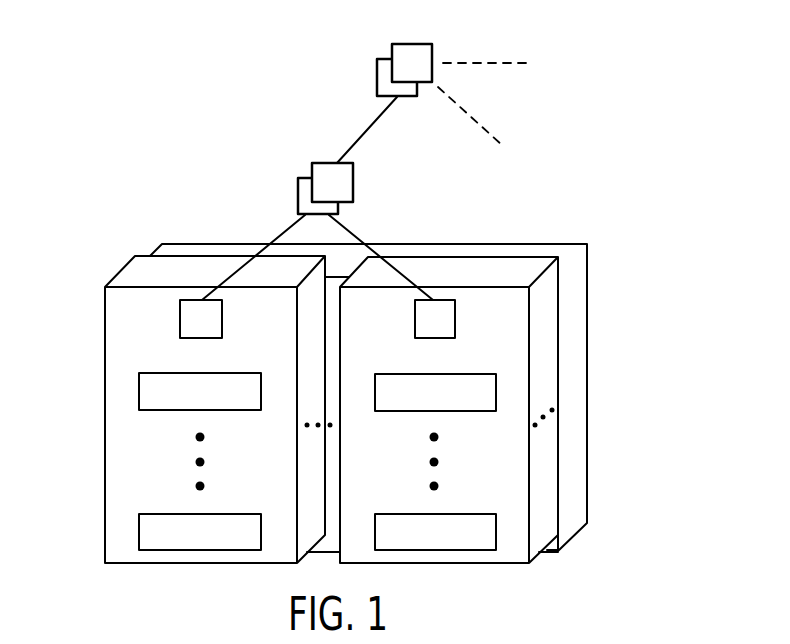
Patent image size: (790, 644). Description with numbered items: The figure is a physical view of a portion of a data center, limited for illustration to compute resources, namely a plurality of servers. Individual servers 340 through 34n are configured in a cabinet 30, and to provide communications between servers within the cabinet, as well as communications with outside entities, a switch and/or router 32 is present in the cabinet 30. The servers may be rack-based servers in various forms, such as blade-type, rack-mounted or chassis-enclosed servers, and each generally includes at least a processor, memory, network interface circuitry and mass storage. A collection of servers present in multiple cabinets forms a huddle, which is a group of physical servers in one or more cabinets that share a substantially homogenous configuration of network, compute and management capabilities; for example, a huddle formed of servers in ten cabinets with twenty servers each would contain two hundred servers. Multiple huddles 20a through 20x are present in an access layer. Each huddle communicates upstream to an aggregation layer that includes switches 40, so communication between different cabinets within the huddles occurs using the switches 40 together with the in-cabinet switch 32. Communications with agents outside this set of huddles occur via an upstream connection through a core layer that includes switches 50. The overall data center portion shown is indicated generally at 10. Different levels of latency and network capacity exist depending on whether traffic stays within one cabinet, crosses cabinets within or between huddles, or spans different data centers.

The system 10 is at (137, 93).
The huddle 20a is at (120, 564).
The huddle 20x is at (574, 538).
The cabinet 30 is at (157, 331).
The switch and/or router 32 is at (215, 331).
The server 340 is at (454, 387).
The server 34n is at (317, 531).
The switch 40 is at (309, 178).
The switch 50 is at (391, 60).